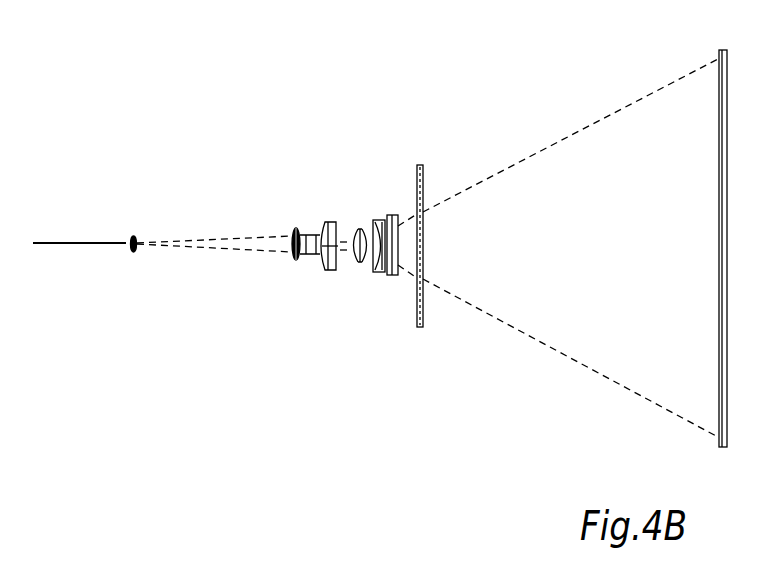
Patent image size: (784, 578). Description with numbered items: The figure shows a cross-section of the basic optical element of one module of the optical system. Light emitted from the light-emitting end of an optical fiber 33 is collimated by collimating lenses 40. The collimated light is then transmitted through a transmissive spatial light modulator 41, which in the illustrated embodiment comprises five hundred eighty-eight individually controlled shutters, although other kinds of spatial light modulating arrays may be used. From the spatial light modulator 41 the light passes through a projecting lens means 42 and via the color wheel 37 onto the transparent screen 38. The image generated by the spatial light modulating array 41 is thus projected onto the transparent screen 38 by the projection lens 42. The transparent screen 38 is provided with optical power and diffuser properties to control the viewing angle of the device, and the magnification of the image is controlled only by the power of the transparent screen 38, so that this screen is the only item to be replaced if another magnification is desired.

The optical fiber 33 is at (88, 241).
The collimating lenses 40 is at (293, 230).
The transmissive spatial light modulator 41 is at (310, 235).
The projecting lens means 42 is at (378, 220).
The color wheel 37 is at (423, 163).
The transparent screen 38 is at (719, 53).